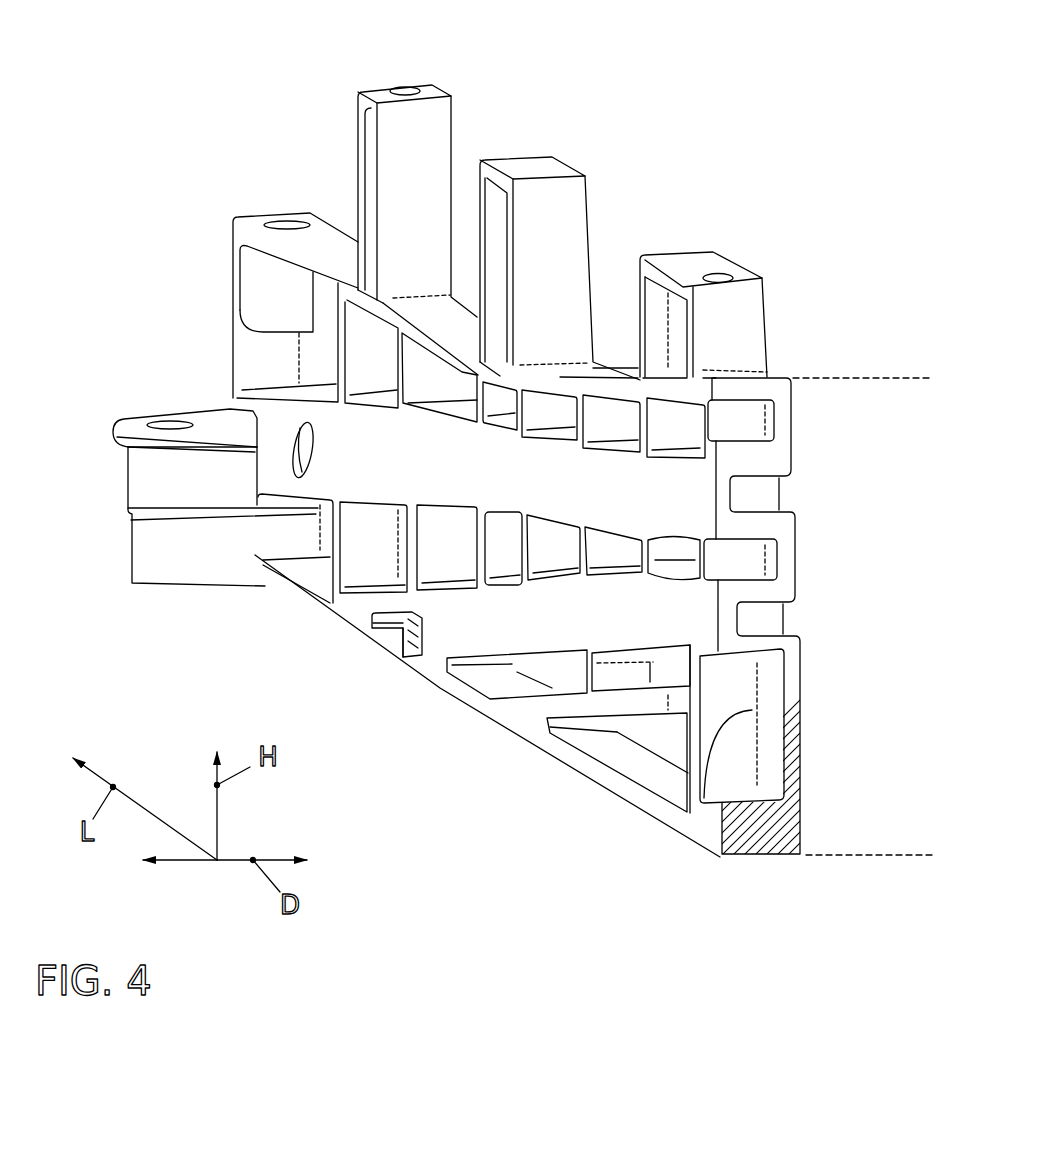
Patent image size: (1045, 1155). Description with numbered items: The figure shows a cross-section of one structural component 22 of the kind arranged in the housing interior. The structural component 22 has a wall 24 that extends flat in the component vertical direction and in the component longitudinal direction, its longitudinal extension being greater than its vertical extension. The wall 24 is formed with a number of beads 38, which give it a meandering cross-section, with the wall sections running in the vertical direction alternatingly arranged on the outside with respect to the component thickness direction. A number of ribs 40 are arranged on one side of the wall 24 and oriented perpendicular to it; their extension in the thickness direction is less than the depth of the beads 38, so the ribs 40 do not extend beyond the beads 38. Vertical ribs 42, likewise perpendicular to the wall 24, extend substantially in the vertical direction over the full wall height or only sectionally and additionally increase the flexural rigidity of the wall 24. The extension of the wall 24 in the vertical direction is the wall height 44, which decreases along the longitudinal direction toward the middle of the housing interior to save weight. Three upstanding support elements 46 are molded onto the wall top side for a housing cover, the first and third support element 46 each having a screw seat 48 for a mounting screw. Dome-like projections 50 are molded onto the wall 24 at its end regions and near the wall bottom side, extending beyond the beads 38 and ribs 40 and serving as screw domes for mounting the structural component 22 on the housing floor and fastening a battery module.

The structural component 22 is at (186, 159).
The wall 24 is at (781, 428).
The bead 38 is at (677, 429).
The rib 40 is at (387, 606).
The vertical rib 42 is at (343, 355).
The wall height 44 is at (920, 378).
The support element 46 is at (445, 120).
The screw seat 48 is at (410, 91).
The projection 50 is at (132, 550).